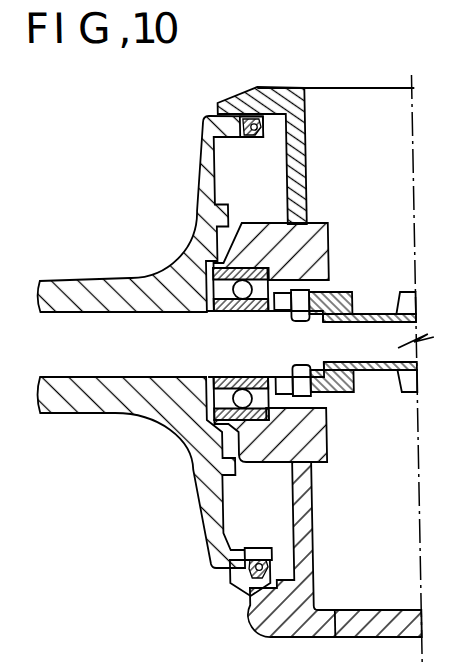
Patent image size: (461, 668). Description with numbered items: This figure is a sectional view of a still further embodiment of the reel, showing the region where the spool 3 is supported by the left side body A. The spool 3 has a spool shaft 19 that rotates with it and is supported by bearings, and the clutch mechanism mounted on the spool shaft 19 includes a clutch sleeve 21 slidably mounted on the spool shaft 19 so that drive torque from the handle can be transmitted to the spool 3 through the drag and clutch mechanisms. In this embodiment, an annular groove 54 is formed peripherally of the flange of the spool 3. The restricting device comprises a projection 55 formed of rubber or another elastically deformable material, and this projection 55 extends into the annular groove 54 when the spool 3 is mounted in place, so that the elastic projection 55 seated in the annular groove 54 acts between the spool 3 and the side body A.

The spool 3 is at (109, 285).
The spool shaft 19 is at (119, 363).
The annular groove 54 is at (251, 548).
The projection 55 is at (246, 124).
The clutch sleeve 21 is at (374, 373).
The left side body A is at (300, 535).